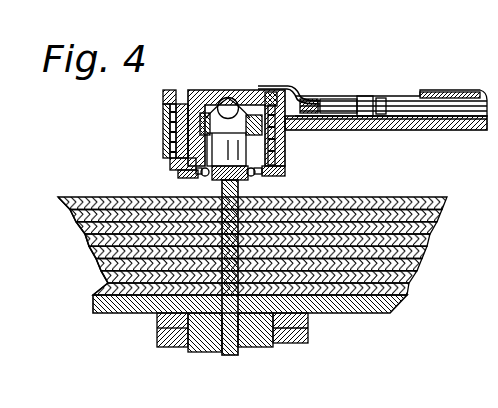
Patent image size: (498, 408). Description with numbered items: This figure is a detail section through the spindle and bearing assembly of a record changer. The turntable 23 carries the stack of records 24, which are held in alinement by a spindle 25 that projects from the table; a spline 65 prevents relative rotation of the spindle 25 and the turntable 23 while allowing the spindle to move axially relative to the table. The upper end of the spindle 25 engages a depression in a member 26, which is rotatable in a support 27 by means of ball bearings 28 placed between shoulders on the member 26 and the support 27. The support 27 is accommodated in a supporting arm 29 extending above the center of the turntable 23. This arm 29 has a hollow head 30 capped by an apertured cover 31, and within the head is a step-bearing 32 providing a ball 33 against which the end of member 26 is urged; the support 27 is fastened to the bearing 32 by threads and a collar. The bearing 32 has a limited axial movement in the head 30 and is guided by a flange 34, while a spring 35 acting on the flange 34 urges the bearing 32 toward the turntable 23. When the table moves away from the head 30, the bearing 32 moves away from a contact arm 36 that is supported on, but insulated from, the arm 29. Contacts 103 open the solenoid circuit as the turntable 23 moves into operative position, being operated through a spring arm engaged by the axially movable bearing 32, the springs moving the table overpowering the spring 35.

The turntable 23 is at (112, 313).
The stack of records 24 is at (422, 197).
The spindle 25 is at (330, 197).
The member 26 is at (200, 192).
The support 27 is at (282, 177).
The ball bearings 28 is at (288, 158).
The supporting arm 29 is at (408, 131).
The hollow head 30 is at (172, 128).
The apertured cover 31 is at (176, 90).
The step-bearing 32 is at (200, 90).
The ball 33 is at (173, 162).
The flange 34 is at (170, 144).
The spring 35 is at (290, 84).
The contact arm 36 is at (273, 86).
The spline 65 is at (220, 305).
The contacts 103 is at (333, 98).